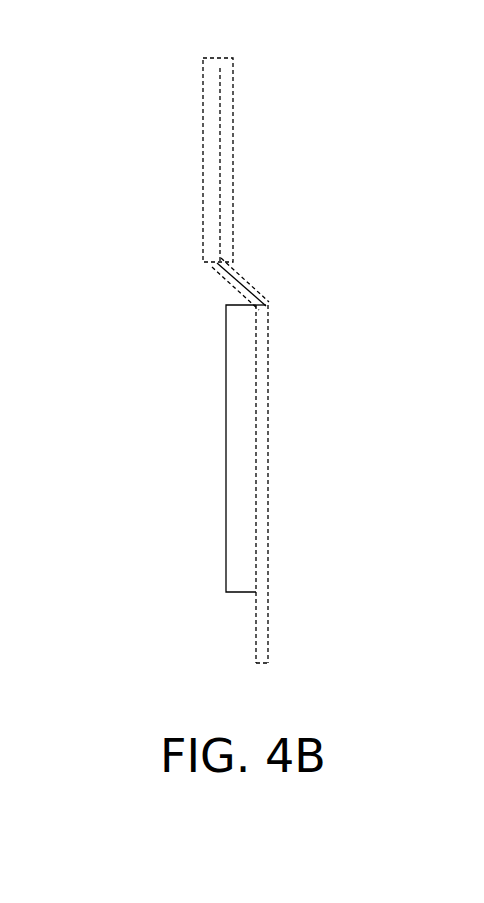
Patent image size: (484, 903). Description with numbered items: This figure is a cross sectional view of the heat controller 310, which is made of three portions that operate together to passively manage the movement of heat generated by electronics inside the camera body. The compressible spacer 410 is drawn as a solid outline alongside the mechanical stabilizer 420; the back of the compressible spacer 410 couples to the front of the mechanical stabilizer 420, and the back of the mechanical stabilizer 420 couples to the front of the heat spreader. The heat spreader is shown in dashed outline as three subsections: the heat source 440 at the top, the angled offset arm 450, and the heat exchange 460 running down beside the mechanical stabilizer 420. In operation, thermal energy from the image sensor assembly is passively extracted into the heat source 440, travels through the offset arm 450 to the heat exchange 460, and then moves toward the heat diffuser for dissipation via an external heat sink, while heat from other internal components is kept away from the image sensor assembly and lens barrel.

The heat controller 310 is at (133, 56).
The compressible spacer 410 is at (244, 518).
The mechanical stabilizer 420 is at (256, 342).
The heat source 440 is at (220, 95).
The offset arm 450 is at (248, 283).
The heat exchange 460 is at (268, 388).